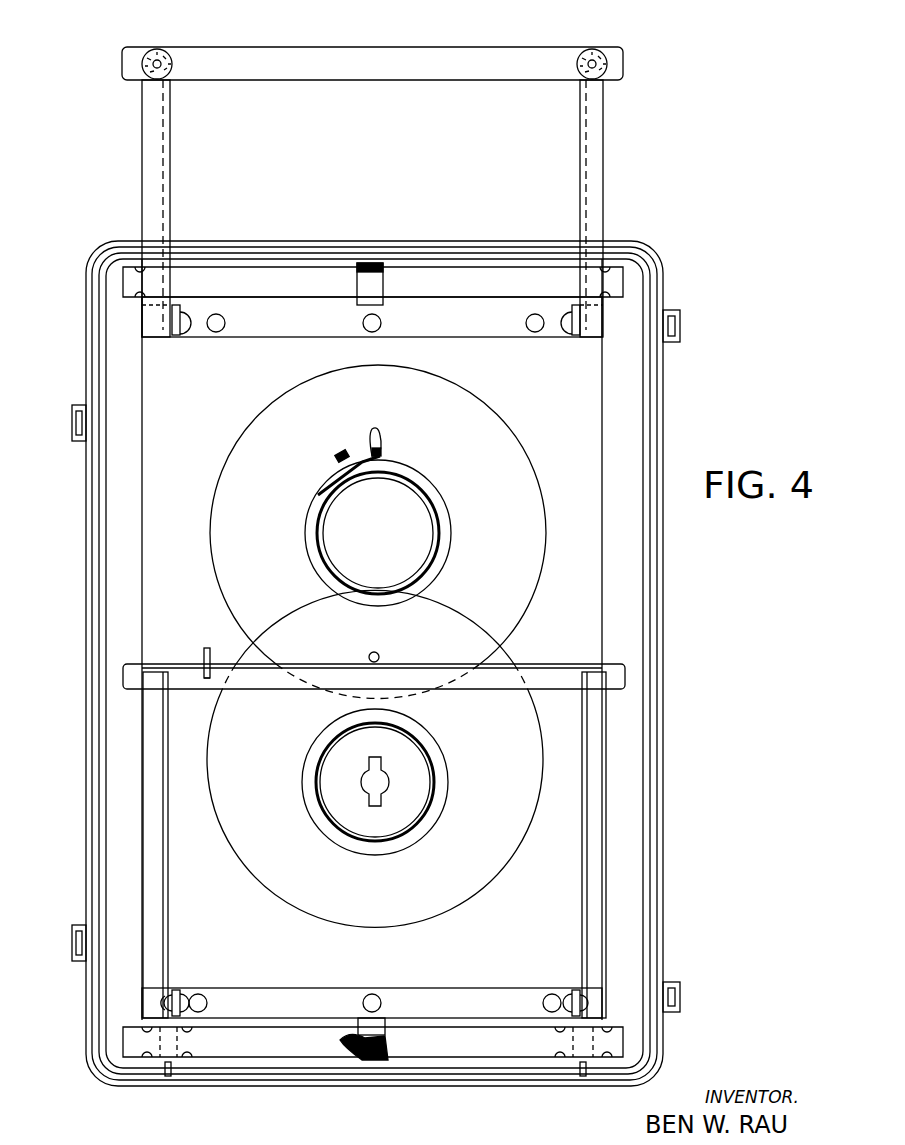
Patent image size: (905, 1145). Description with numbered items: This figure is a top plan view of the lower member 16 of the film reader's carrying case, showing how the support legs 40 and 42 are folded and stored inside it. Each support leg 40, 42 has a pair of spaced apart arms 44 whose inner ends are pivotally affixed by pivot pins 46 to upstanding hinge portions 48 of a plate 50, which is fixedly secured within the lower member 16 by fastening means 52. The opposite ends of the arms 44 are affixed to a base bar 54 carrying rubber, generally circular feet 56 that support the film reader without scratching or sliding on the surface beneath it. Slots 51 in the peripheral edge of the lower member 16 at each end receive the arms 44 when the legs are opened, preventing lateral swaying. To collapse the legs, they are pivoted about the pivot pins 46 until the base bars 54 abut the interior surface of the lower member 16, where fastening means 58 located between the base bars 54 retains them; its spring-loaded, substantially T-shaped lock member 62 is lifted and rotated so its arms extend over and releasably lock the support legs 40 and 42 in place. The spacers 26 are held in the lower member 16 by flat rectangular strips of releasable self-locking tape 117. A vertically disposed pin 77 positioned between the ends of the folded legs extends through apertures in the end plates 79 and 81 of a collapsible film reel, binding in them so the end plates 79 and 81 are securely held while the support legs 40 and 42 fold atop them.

The lower member 16 is at (86, 560).
The spacers 26 is at (278, 280).
The support leg 40 is at (480, 65).
The support leg 42 is at (542, 684).
The arms 44 is at (142, 158).
The pivot pins 46 is at (598, 1000).
The hinge portions 48 is at (178, 338).
The plate 50 is at (295, 325).
The slots 51 is at (168, 1080).
The fastening means 52 is at (216, 332).
The base bar 54 is at (305, 62).
The feet 56 is at (160, 50).
The fastening means 58 is at (208, 648).
The lock member 62 is at (206, 682).
The pin 77 is at (380, 655).
The end plate 79 is at (520, 478).
The end plate 81 is at (512, 856).
The self-locking tape 117 is at (386, 1055).